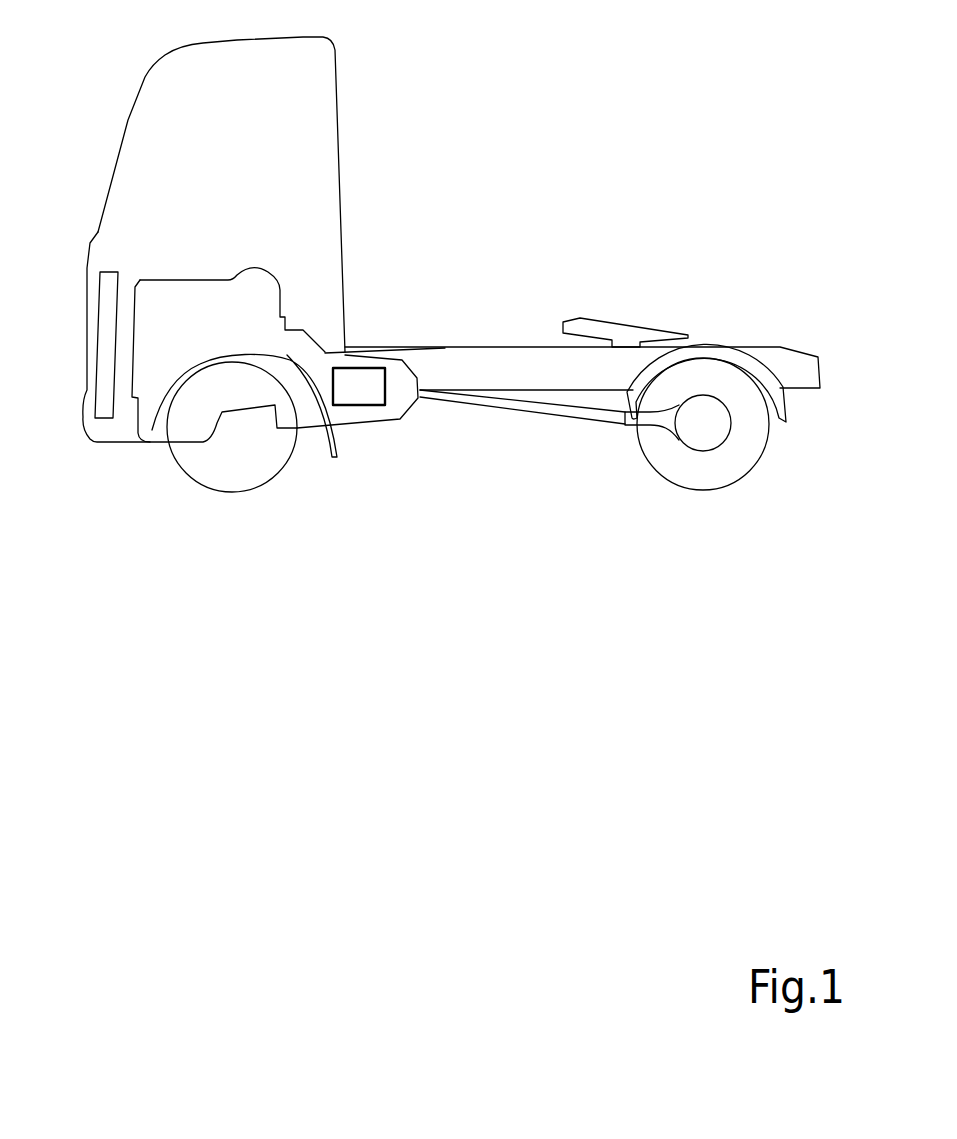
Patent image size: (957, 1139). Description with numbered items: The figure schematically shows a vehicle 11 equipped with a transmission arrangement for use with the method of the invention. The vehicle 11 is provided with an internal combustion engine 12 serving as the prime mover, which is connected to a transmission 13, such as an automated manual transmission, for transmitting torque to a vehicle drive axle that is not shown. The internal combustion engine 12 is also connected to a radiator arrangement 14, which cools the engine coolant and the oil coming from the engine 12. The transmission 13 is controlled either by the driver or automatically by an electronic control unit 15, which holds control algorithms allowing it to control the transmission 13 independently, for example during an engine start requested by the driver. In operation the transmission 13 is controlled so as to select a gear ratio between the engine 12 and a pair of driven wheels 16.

The vehicle 11 is at (332, 128).
The internal combustion engine 12 is at (185, 277).
The transmission 13 is at (410, 392).
The radiator arrangement 14 is at (102, 405).
The electronic control unit 15 is at (368, 382).
The driven wheels 16 is at (732, 462).